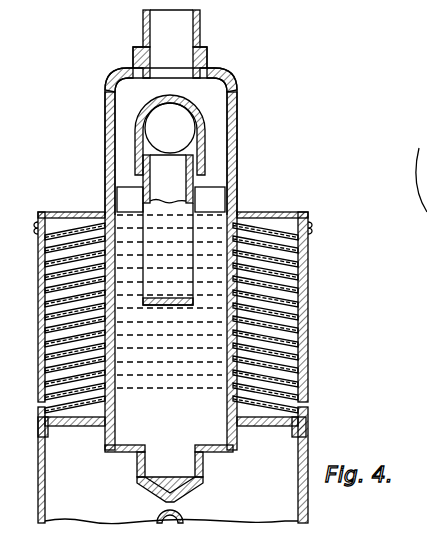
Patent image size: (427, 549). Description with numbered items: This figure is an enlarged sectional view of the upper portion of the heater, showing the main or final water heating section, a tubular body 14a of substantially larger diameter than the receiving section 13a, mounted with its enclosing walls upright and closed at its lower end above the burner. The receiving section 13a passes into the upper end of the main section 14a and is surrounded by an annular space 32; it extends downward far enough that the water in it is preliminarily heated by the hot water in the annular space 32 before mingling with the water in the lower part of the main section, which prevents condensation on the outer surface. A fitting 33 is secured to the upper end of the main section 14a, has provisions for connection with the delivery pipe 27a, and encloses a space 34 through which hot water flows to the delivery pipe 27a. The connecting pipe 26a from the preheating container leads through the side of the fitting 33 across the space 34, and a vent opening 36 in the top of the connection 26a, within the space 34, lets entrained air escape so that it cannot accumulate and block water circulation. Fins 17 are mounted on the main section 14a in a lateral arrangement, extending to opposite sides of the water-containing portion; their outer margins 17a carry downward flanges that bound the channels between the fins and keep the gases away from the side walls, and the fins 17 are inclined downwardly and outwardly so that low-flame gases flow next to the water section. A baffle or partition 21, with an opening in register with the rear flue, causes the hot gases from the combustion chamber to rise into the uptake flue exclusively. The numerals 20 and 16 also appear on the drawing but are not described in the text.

The delivery pipe 27a is at (178, 33).
The vent opening 36 is at (168, 98).
The connecting pipe 26a is at (183, 118).
The space 34 is at (125, 108).
The fitting 33 is at (228, 142).
The receiving section 13a is at (128, 178).
The annular space 32 is at (215, 188).
The top plate 20 is at (252, 213).
The fins 17 is at (278, 240).
The outer margins 17a is at (308, 286).
The tubular body 14a is at (110, 382).
The baffle 21 is at (260, 427).
The dome 16 is at (184, 516).